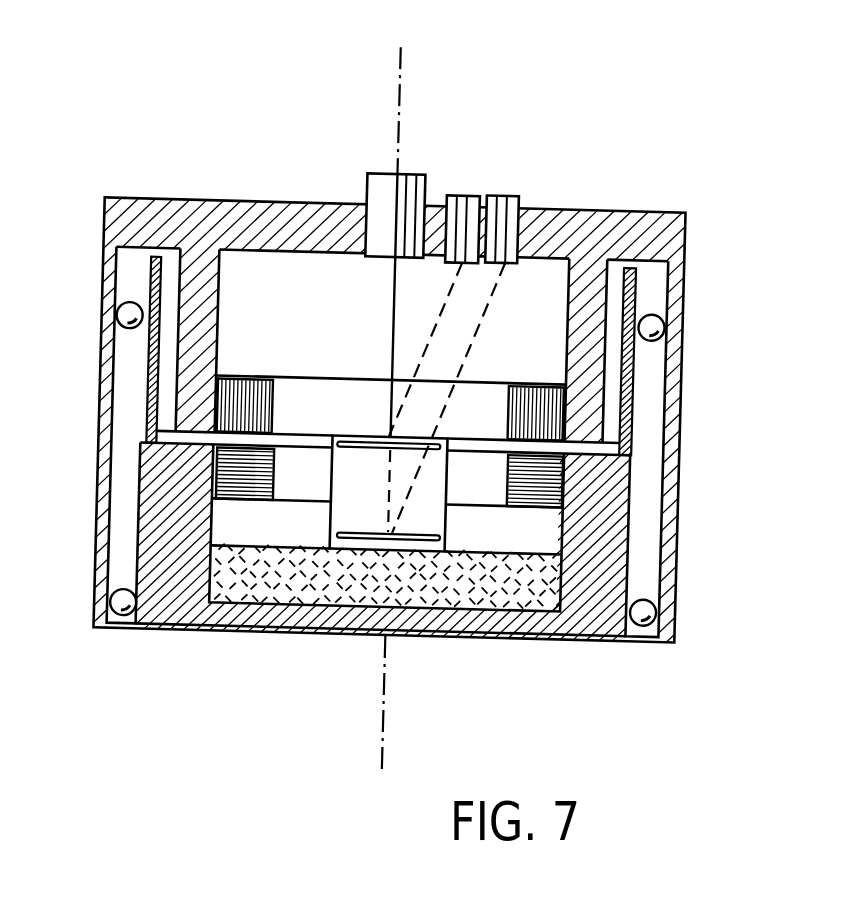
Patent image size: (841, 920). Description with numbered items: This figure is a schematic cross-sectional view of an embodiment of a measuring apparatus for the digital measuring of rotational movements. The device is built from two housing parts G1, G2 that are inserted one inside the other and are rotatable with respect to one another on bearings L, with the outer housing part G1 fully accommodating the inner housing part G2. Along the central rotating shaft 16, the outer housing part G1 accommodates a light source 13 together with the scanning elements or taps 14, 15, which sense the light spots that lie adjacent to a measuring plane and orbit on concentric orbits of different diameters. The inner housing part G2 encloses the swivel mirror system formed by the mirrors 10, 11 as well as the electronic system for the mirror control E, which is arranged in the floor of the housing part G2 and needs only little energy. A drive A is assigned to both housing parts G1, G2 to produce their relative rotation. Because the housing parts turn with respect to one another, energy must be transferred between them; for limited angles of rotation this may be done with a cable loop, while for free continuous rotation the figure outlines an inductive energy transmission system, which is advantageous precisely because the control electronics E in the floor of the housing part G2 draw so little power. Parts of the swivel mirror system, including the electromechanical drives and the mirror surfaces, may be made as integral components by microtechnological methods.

The outer housing part G1 is at (207, 232).
The inner housing part G2 is at (188, 636).
The bearings L is at (137, 320).
The drive A is at (547, 481).
The electronic system for the mirror control E is at (534, 576).
The mirror 10 is at (407, 440).
The mirror 11 is at (405, 552).
The light source 13 is at (412, 189).
The scanning element 14 is at (454, 195).
The scanning element 15 is at (557, 211).
The central rotating shaft 16 is at (386, 63).